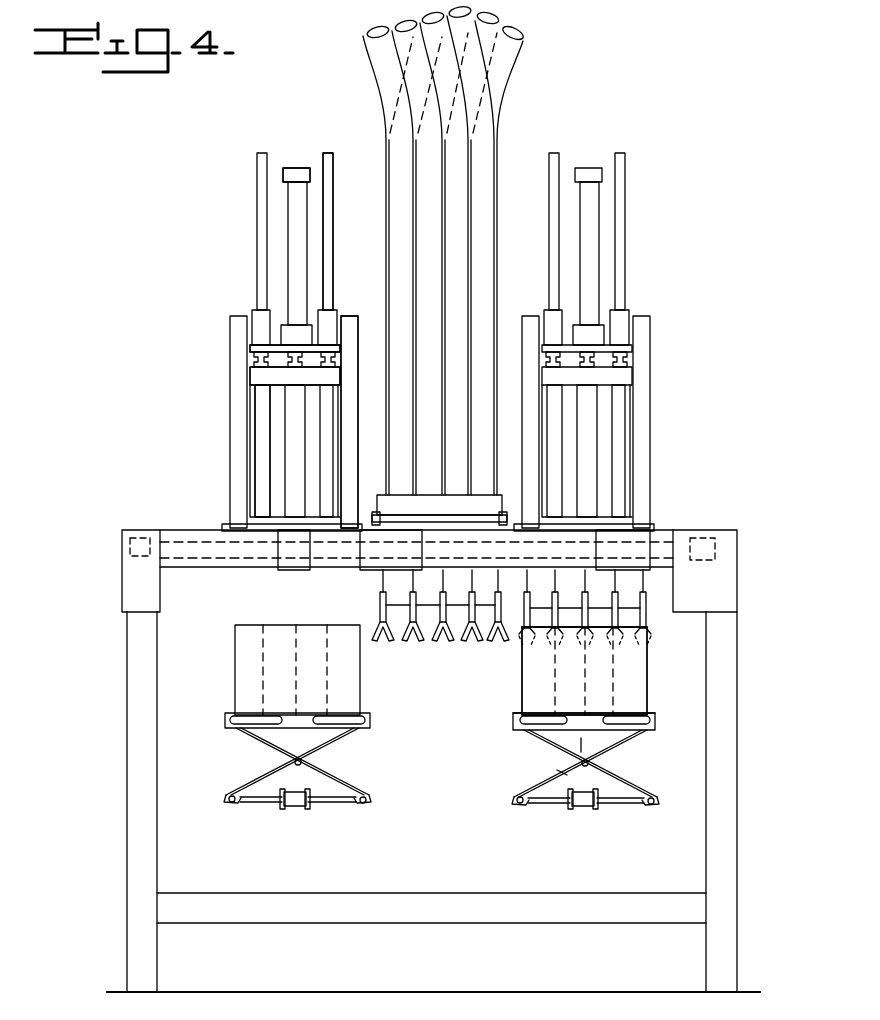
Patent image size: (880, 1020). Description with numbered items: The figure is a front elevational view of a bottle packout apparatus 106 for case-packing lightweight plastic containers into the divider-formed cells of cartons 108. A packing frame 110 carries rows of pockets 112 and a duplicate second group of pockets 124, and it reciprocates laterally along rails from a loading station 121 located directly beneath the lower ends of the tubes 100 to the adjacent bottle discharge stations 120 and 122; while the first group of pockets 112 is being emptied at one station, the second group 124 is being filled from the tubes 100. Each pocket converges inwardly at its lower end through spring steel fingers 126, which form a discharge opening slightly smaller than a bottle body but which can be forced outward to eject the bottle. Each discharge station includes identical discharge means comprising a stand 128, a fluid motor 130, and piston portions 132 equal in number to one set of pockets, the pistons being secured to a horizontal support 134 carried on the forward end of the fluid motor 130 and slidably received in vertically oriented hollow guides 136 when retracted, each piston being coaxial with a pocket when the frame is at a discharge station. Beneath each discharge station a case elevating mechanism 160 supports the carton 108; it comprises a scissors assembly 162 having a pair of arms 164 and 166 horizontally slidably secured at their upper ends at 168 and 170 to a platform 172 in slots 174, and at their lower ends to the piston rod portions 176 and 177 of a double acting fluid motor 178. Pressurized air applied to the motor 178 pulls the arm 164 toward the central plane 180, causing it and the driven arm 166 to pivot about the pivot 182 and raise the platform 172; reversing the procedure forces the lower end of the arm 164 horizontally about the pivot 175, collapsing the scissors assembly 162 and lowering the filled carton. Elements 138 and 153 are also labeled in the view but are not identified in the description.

The tubes 100 is at (422, 395).
The bottle packout apparatus 106 is at (728, 465).
The carton 108 is at (362, 703).
The packing frame 110 is at (492, 642).
The pockets 112 is at (523, 628).
The bottle discharge station 120 is at (266, 320).
The left scissor lift 121 is at (360, 589).
The bottle discharge station 122 is at (680, 243).
The second group of pockets 124 is at (425, 636).
The spring steel fingers 126 is at (638, 633).
The stand 128 is at (355, 318).
The fluid motor 130 is at (296, 167).
The piston portions 132 is at (268, 437).
The horizontal support 134 is at (258, 376).
The hollow guides 136 is at (334, 235).
The upper plate 138 is at (253, 350).
The floor 153 is at (433, 1006).
The case elevating mechanism 160 is at (579, 772).
The scissors assembly 162 is at (625, 753).
The arm 164 is at (640, 788).
The driven arm 166 is at (552, 774).
The slidable securement point 168 is at (579, 714).
The slidable securement point 170 is at (515, 725).
The platform 172 is at (516, 718).
The slots 174 is at (628, 722).
The pivot 175 is at (655, 806).
The piston rod portion 176 is at (622, 806).
The piston rod portion 177 is at (540, 803).
The double acting fluid motor 178 is at (582, 807).
The central plane 180 is at (580, 740).
The pivot 182 is at (590, 760).